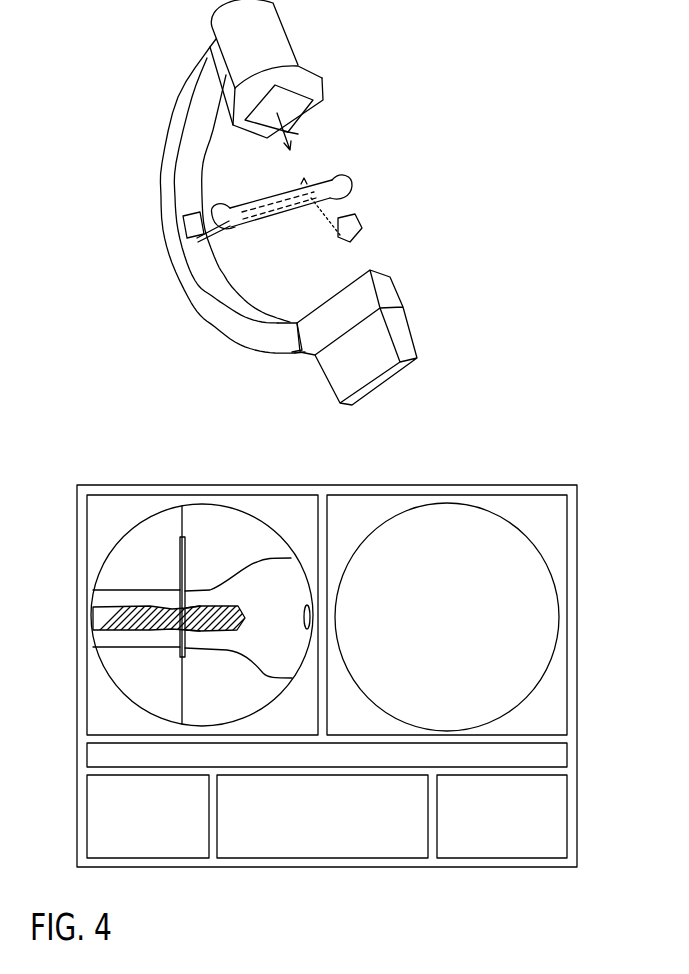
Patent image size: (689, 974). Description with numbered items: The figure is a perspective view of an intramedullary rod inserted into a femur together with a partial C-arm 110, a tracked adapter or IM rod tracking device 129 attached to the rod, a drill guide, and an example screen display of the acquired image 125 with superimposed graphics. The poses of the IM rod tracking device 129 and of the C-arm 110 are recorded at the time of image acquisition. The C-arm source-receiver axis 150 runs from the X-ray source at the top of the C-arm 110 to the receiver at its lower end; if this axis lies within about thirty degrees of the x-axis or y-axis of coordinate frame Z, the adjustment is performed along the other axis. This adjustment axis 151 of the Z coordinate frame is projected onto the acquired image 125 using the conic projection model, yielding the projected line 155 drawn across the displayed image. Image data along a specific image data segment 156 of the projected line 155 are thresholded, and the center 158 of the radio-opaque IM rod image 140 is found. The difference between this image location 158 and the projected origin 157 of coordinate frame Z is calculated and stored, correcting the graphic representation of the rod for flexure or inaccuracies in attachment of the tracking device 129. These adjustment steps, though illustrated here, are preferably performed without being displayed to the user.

The C-arm 110 is at (140, 163).
The C-arm source-receiver axis 150 is at (298, 130).
The adjustment axis 151 is at (311, 180).
The IM rod tracking device 129 is at (217, 237).
The acquired image 125 is at (150, 530).
The projected line 155 is at (188, 520).
The image data segment 156 is at (188, 548).
The projected origin 157 is at (182, 597).
The center of the IM rod image 158 is at (189, 610).
The IM rod image 140 is at (228, 631).